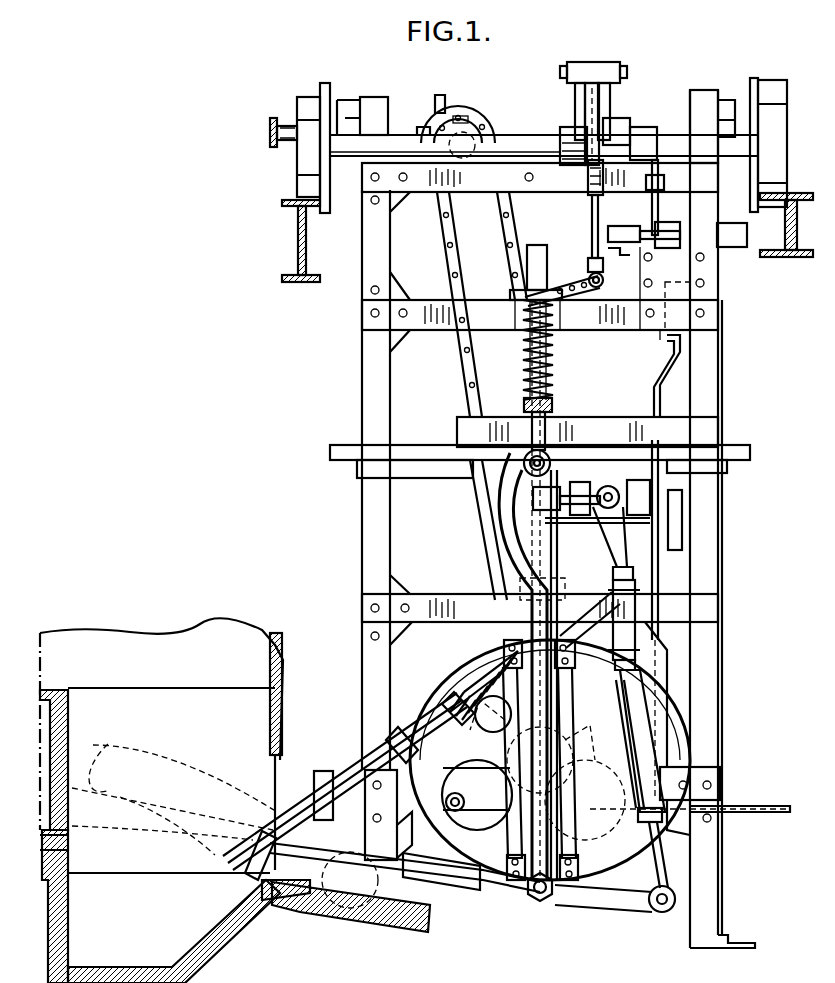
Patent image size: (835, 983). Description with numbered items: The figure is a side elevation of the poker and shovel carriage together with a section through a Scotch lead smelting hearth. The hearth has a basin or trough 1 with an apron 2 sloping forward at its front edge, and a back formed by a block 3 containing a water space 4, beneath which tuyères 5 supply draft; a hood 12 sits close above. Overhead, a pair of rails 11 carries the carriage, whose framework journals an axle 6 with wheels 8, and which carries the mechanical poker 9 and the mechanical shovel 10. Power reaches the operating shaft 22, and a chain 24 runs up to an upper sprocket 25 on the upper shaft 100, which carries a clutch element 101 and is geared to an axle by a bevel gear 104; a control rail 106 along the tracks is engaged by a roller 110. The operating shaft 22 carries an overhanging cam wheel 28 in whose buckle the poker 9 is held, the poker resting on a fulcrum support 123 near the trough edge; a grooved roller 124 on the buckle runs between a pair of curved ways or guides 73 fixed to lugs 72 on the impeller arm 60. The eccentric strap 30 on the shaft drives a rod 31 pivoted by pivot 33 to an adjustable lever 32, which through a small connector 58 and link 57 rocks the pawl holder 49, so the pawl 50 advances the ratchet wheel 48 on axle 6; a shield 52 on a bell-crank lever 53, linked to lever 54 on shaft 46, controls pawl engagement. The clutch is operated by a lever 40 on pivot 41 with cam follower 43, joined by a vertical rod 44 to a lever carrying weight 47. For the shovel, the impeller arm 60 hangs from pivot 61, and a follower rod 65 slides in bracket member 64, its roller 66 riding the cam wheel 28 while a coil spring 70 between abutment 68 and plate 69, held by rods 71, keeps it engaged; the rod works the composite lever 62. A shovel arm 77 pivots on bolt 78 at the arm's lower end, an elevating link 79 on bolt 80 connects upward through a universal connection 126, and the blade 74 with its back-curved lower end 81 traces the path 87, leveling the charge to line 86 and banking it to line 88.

The basin or trough 1 is at (174, 931).
The apron 2 is at (385, 918).
The block 3 is at (72, 740).
The water space 4 is at (62, 715).
The tuyères 5 is at (60, 845).
The axle 6 is at (530, 148).
The wheels 8 is at (308, 100).
The mechanical poker 9 is at (365, 772).
The mechanical shovel 10 is at (350, 880).
The rails 11 is at (345, 228).
The hood 12 is at (282, 715).
The operating shaft 22 is at (570, 770).
The chain 24 is at (460, 380).
The upper sprocket 25 is at (466, 125).
The cam wheel 28 is at (455, 690).
The strap 30 is at (505, 748).
The rod 31 is at (548, 440).
The lever 32 is at (560, 292).
The pivot 33 is at (581, 314).
The lever 40 is at (780, 812).
The pivot 41 is at (458, 810).
The cam follower 43 is at (650, 830).
The vertical rod 44 is at (660, 578).
The pivot 46 is at (745, 245).
The weight 47 is at (668, 336).
The ratchet wheel 48 is at (592, 170).
The pawl holder 49 is at (606, 90).
The pawl 50 is at (592, 62).
The shield 52 is at (595, 110).
The bell-crank lever 53 is at (618, 135).
The lever 54 is at (652, 198).
The link 57 is at (592, 205).
The small connector 58 is at (600, 280).
The impeller arm 60 is at (500, 510).
The pivot 61 is at (550, 458).
The composite lever 62 is at (628, 492).
The bracket member 64 is at (558, 350).
The follower rod 65 is at (540, 540).
The roller 66 is at (525, 608).
The abutment 68 is at (524, 405).
The plate 69 is at (515, 298).
The coil spring 70 is at (528, 350).
The rods 71 is at (520, 335).
The lugs 72 is at (575, 640).
The ways or guides 73 is at (648, 800).
The shovel blade 74 is at (270, 895).
The shovel arm 77 is at (455, 888).
The pivot bolt 78 is at (538, 900).
The elevating link 79 is at (700, 780).
The pivot bolt 80 is at (680, 930).
The back-curved lower end 81 is at (250, 870).
The line 86 is at (125, 822).
The dotted line and arrows 87 is at (215, 805).
The line 88 is at (172, 809).
The upper shaft 100 is at (460, 140).
The clutch element 101 is at (488, 128).
The bevel gear 104 is at (437, 97).
The control rail 106 is at (272, 130).
The roller 110 is at (282, 128).
The fulcrum support 123 is at (324, 788).
The grooved roller 124 is at (504, 645).
The loose or universal connection 126 is at (600, 497).